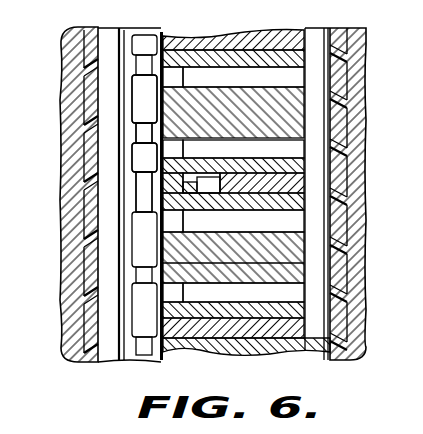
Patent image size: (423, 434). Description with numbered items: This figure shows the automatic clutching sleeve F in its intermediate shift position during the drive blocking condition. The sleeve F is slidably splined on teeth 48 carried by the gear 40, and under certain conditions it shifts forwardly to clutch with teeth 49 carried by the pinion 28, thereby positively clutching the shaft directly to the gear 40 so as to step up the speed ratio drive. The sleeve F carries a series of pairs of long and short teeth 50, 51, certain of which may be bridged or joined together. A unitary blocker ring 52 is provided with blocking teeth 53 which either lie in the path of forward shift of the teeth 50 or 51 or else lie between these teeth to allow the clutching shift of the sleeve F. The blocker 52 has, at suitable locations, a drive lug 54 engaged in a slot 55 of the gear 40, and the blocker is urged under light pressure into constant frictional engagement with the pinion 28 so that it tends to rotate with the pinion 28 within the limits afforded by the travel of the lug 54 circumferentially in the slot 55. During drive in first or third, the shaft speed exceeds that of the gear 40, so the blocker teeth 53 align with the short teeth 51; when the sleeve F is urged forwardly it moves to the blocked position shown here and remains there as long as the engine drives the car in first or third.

The pinion 28 is at (62, 215).
The gear 40 is at (340, 126).
The teeth 48 is at (251, 33).
The teeth 49 is at (148, 130).
The long teeth 50 is at (168, 126).
The short teeth 51 is at (204, 88).
The blocker ring 52 is at (163, 28).
The blocking teeth 53 is at (156, 93).
The drive lug 54 is at (216, 186).
The slot 55 is at (213, 192).
The automatic clutching sleeve F is at (290, 102).